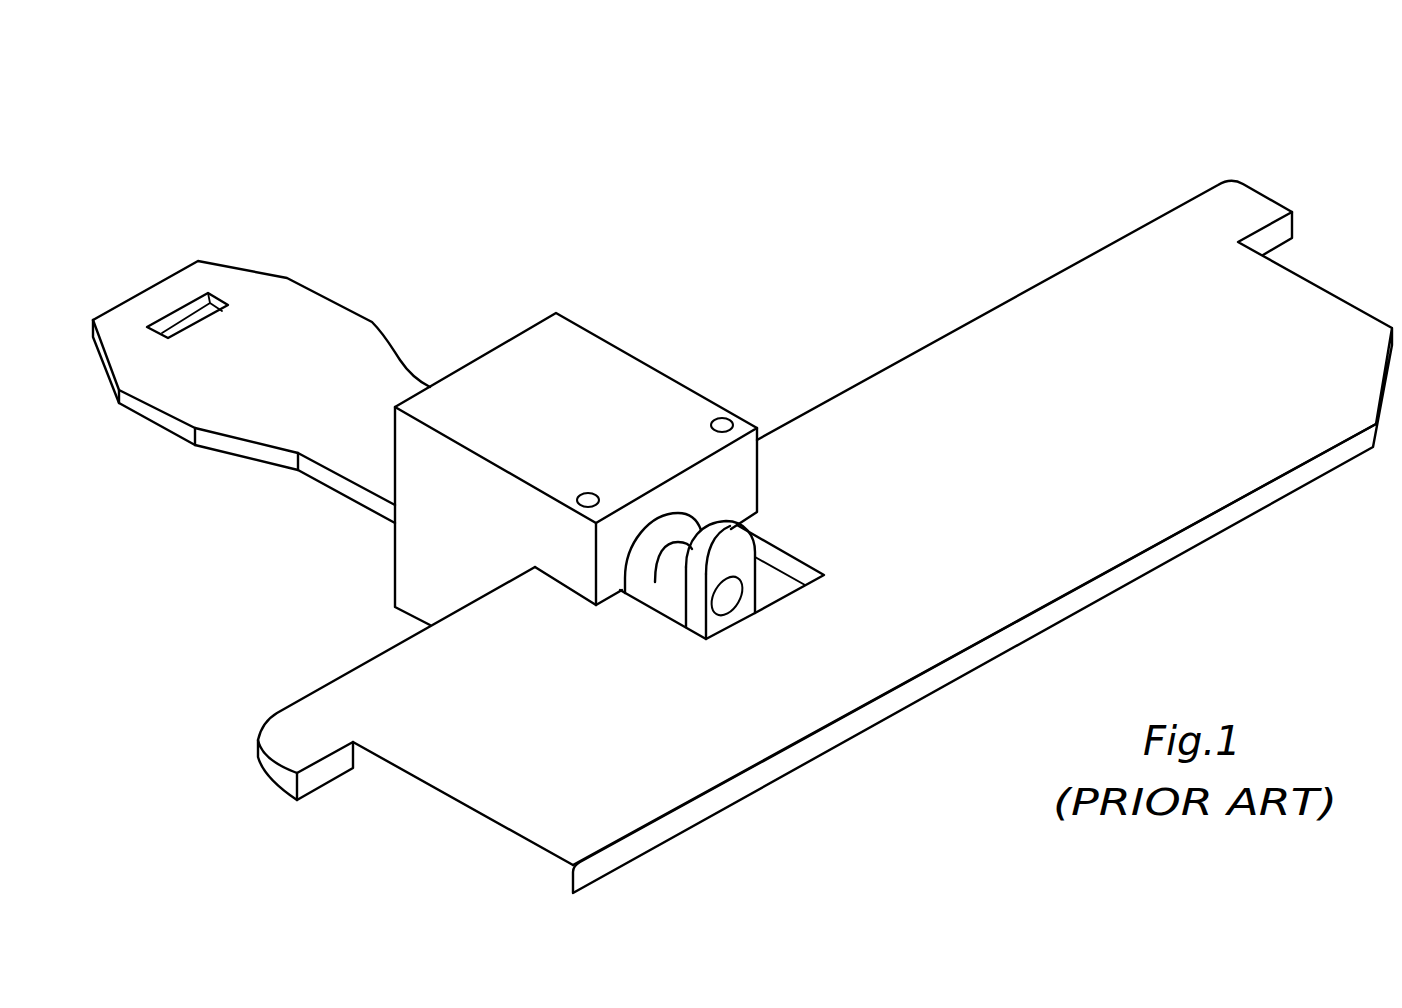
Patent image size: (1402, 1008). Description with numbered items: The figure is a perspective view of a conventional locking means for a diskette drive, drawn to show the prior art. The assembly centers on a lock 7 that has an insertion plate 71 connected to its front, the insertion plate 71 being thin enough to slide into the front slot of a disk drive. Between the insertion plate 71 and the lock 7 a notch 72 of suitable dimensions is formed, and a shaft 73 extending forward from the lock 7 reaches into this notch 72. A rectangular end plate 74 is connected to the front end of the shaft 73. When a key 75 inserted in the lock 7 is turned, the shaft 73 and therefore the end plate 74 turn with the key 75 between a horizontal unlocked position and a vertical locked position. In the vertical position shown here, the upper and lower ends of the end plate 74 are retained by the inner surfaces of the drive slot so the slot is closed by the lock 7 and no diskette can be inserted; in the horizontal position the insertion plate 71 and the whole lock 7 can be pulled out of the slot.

The lock 7 is at (529, 363).
The insertion plate 71 is at (1142, 270).
The notch 72 is at (773, 583).
The shaft 73 is at (673, 581).
The rectangular end plate 74 is at (722, 563).
The key 75 is at (298, 307).